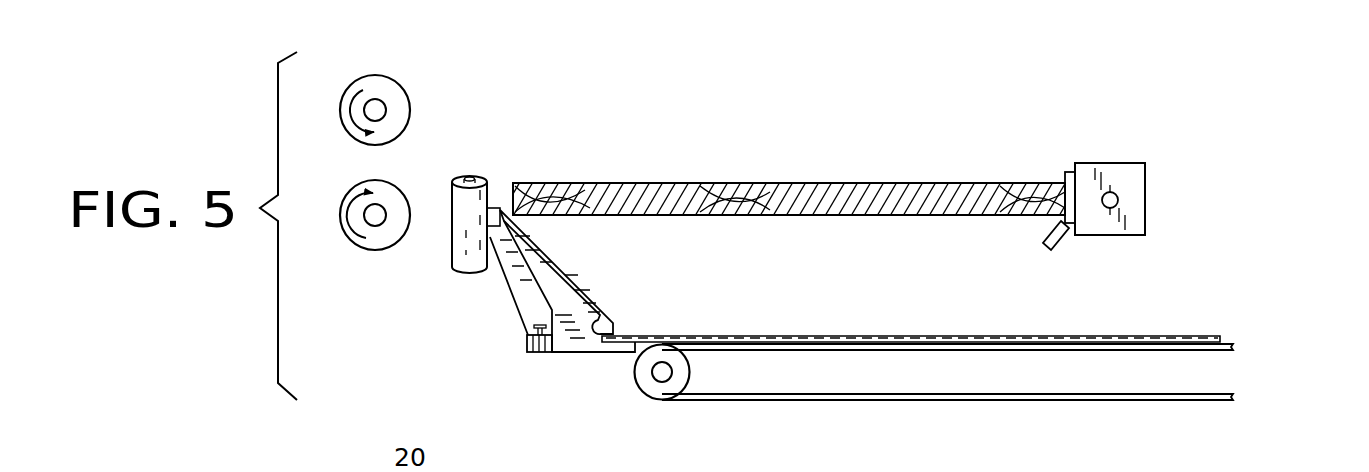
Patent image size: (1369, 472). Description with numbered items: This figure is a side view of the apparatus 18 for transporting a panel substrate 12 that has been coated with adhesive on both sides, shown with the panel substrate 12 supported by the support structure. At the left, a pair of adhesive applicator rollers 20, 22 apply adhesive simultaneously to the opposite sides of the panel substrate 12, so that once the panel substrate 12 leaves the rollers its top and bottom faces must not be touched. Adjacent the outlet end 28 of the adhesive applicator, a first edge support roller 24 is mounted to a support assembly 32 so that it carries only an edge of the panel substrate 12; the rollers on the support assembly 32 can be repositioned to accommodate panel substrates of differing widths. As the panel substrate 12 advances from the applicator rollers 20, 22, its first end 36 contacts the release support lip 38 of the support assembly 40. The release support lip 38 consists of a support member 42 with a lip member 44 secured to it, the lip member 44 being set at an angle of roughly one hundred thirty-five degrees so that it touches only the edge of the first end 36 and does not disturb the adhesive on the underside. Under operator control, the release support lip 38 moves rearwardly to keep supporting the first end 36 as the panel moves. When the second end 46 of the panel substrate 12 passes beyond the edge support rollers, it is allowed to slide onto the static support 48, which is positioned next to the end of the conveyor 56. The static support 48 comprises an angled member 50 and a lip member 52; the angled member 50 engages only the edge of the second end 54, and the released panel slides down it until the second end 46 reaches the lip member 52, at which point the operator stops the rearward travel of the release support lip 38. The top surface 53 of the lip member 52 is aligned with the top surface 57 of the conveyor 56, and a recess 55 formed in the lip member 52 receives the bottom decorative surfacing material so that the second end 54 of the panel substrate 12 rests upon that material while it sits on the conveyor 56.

The panel substrate 12 is at (713, 183).
The apparatus 18 is at (786, 158).
The adhesive applicator roller 20 is at (375, 75).
The adhesive applicator roller 22 is at (358, 248).
The first edge support roller 24 is at (470, 178).
The outlet end 28 is at (397, 158).
The support assembly 32 is at (520, 323).
The first end 36 is at (1070, 172).
The release support lip 38 is at (1145, 185).
The support assembly 40 is at (840, 278).
The support member 42 is at (1145, 218).
The lip member 44 is at (1060, 240).
The second end 46 is at (552, 183).
The static support 48 is at (566, 360).
The angled member 50 is at (565, 260).
The lip member 52 is at (620, 352).
The top surface 53 is at (630, 333).
The second end 54 is at (497, 246).
The recess 55 is at (601, 306).
The conveyor 56 is at (908, 402).
The top surface 57 is at (1236, 347).